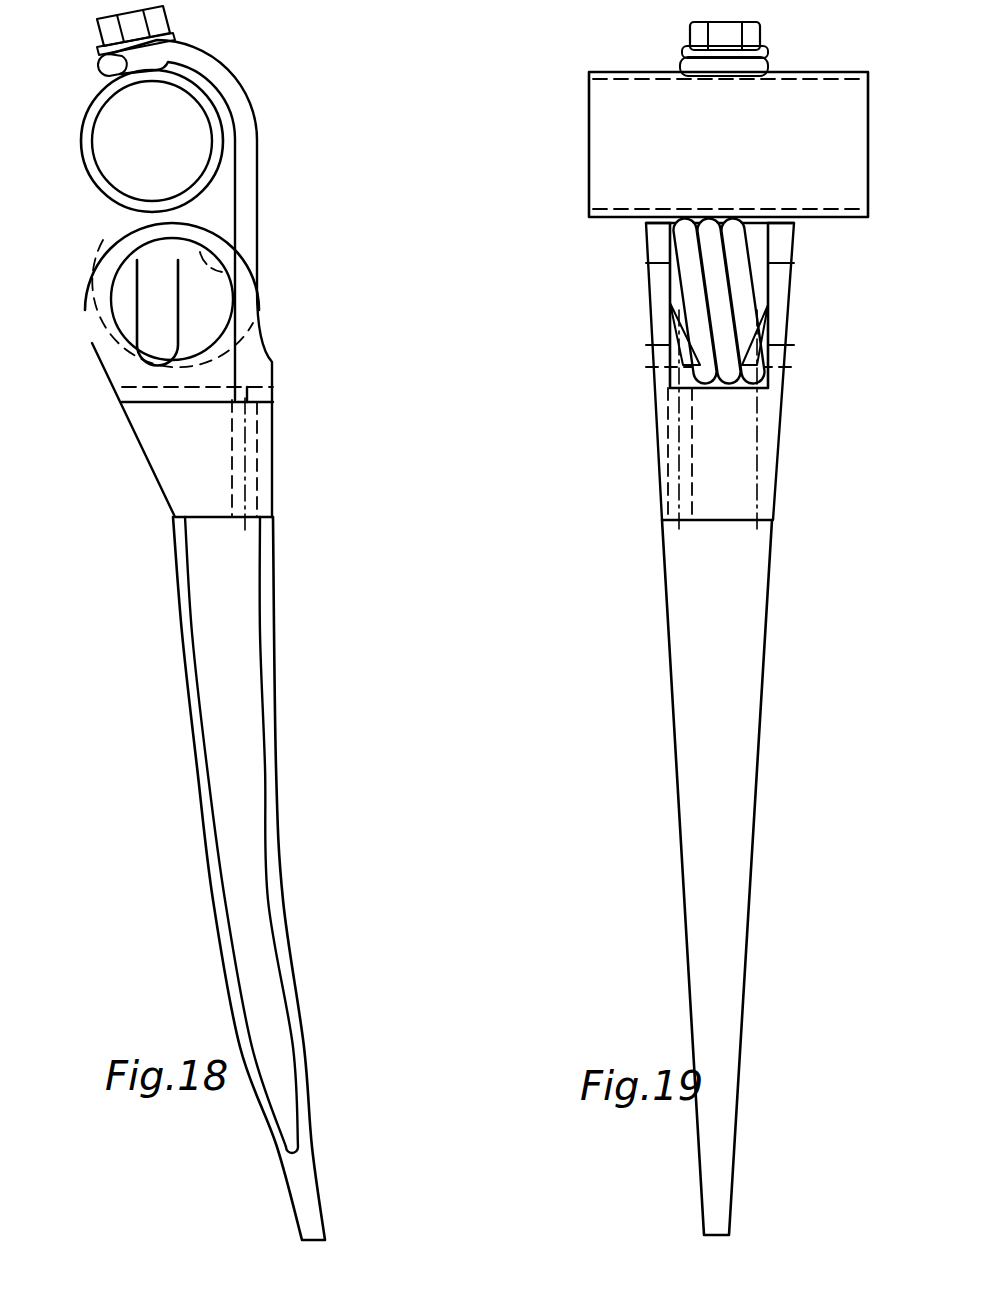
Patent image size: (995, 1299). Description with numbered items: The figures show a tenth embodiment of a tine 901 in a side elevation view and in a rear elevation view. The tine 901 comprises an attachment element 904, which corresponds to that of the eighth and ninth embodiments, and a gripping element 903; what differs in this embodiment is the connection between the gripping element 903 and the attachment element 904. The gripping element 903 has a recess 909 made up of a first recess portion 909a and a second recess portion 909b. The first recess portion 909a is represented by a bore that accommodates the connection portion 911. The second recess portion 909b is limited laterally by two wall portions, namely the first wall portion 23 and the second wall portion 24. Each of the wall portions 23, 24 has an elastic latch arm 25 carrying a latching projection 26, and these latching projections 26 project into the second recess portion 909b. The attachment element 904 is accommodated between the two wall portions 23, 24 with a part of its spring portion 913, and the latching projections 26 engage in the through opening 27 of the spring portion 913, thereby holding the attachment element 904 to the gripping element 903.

In FIG. 18, the tine 901 is at (465, 99).
In FIG. 18, the attachment element 904 is at (262, 216).
In FIG. 18, the through opening 27 is at (268, 250).
In FIG. 18, the elastic latch arm 25 is at (157, 298).
In FIG. 18, the second wall portion 24 is at (115, 370).
In FIG. 19, the second wall portion 24 is at (782, 250).
In FIG. 18, the first recess portion 909a is at (254, 470).
In FIG. 19, the first recess portion 909a is at (668, 505).
In FIG. 18, the gripping element 903 is at (288, 757).
In FIG. 19, the gripping element 903 is at (662, 754).
In FIG. 19, the first wall portion 23 is at (658, 247).
In FIG. 19, the second recess portion 909b is at (703, 280).
In FIG. 19, the recess 909 is at (595, 300).
In FIG. 19, the spring portion 913 is at (695, 287).
In FIG. 19, the latching projection 26 is at (667, 386).
In FIG. 19, the connection portion 911 is at (676, 462).